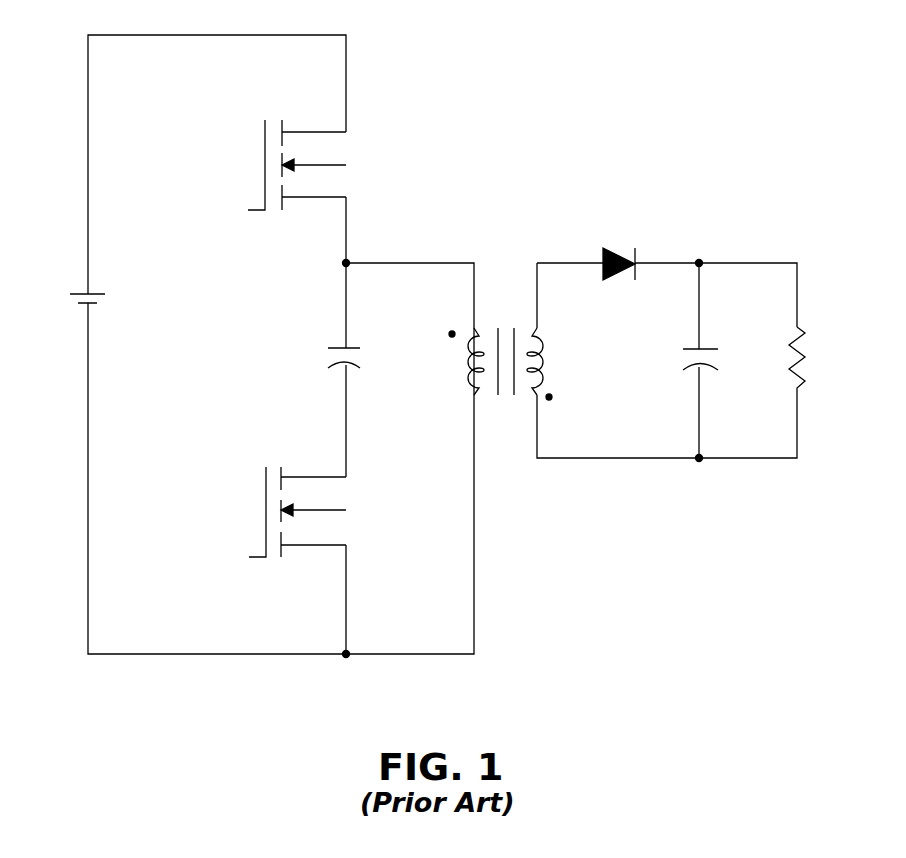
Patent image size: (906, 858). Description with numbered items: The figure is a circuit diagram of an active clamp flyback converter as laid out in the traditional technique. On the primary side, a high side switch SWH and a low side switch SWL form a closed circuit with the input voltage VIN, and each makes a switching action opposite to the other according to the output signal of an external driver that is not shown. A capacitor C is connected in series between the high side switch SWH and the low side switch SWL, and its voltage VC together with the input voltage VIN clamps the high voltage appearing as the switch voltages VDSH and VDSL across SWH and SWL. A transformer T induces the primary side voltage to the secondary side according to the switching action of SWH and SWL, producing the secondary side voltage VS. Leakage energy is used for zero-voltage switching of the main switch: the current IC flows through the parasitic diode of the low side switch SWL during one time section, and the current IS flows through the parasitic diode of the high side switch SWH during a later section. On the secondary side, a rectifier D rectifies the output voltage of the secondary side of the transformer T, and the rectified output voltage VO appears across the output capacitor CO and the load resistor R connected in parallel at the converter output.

The input voltage VIN is at (70, 300).
The high side switch SWH is at (268, 165).
The low side switch SWL is at (269, 512).
The drain-source voltage of high side switch VDSH is at (379, 164).
The drain-source voltage of low side switch VDSL is at (371, 511).
The capacitor C is at (327, 360).
The capacitor voltage VC is at (383, 360).
The current Is IS is at (370, 249).
The current Ic IC is at (367, 637).
The transformer T is at (500, 341).
The secondary side voltage VS is at (580, 358).
The rectifier D is at (589, 259).
The output voltage VO is at (817, 250).
The output capacitor CO is at (700, 359).
The load resistor R is at (813, 361).